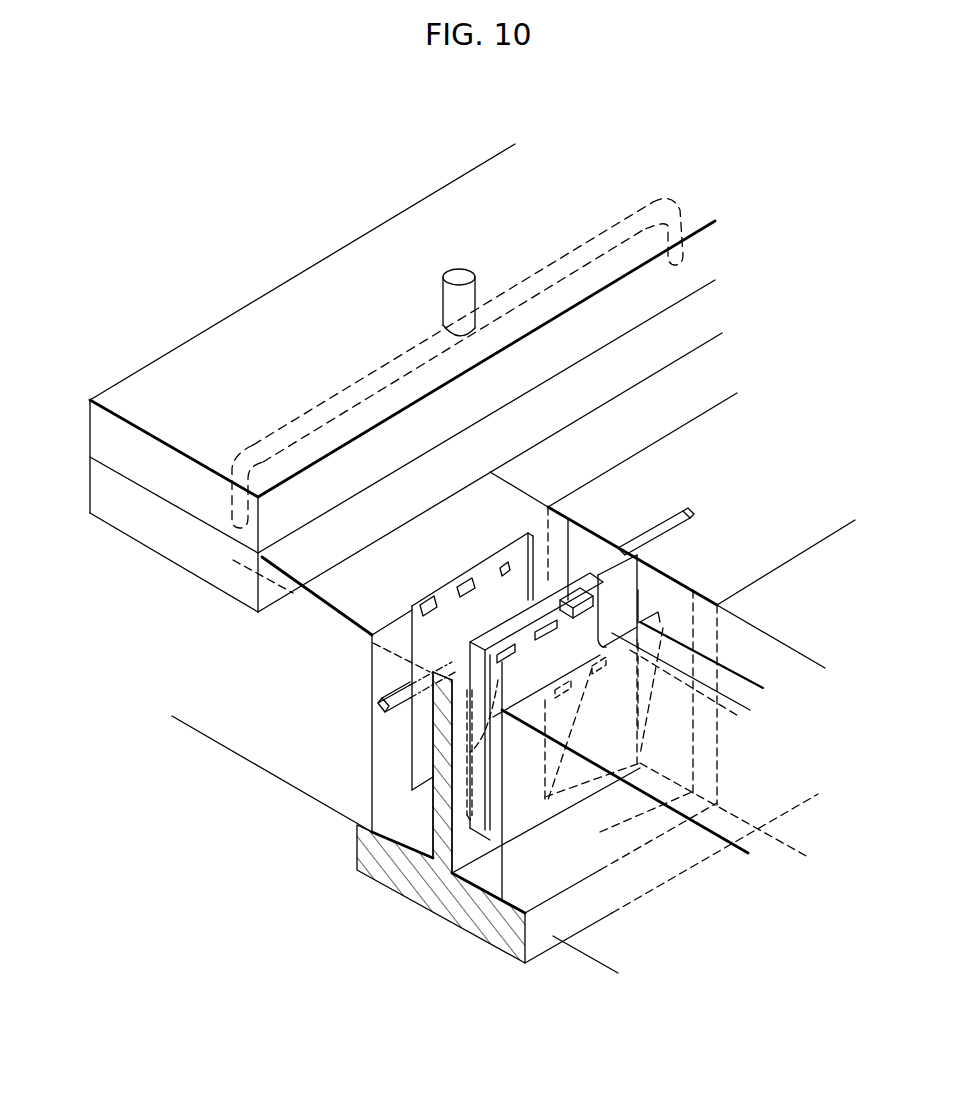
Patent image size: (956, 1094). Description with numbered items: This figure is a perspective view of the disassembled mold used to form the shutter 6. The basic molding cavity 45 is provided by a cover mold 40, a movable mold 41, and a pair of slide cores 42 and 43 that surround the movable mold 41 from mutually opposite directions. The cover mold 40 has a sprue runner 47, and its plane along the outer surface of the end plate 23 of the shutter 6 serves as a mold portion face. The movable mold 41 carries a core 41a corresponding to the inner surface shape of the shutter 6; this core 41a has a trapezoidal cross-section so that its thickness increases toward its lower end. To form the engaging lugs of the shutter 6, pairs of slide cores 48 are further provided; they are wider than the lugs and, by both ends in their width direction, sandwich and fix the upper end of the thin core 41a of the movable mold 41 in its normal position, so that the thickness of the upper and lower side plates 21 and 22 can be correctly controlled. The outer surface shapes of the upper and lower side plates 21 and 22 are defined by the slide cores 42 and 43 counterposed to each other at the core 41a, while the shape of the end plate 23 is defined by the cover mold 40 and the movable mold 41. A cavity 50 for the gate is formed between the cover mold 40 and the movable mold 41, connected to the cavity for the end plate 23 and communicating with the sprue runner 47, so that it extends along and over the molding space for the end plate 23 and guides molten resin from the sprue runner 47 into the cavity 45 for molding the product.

The cover mold 40 is at (233, 332).
The sprue runner 47 is at (395, 370).
The slide core 42 is at (527, 490).
The slide core 43 is at (765, 645).
The cavity 45 is at (410, 760).
The slide cores 48 is at (437, 598).
The shutter 6 is at (488, 633).
The end plate 23 is at (520, 626).
The upper side plate 21 is at (600, 622).
The cavity for gate 50 is at (650, 543).
The lower side plate 22 is at (458, 729).
The movable mold 41 is at (484, 932).
The core 41a is at (440, 876).